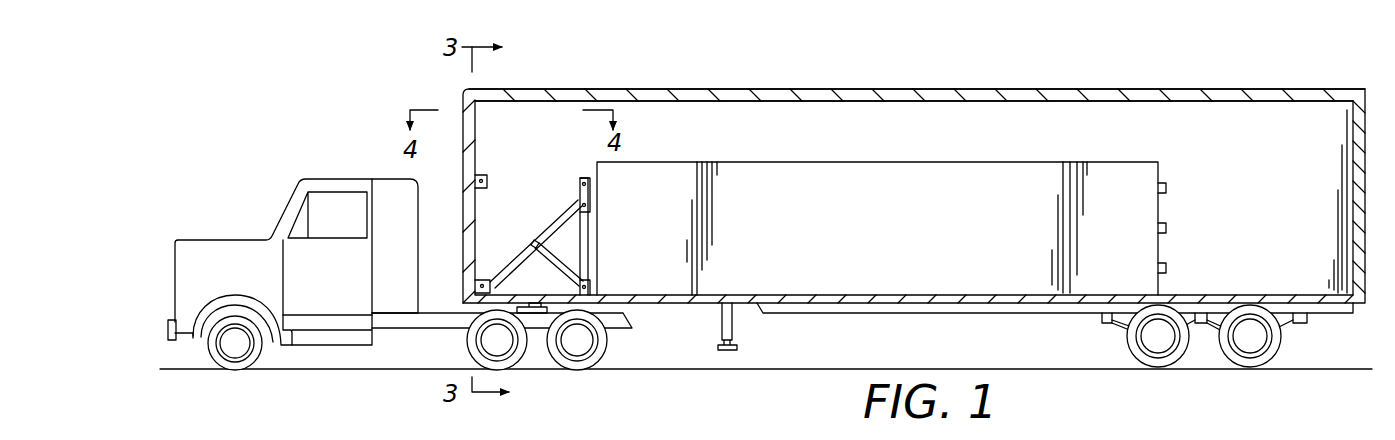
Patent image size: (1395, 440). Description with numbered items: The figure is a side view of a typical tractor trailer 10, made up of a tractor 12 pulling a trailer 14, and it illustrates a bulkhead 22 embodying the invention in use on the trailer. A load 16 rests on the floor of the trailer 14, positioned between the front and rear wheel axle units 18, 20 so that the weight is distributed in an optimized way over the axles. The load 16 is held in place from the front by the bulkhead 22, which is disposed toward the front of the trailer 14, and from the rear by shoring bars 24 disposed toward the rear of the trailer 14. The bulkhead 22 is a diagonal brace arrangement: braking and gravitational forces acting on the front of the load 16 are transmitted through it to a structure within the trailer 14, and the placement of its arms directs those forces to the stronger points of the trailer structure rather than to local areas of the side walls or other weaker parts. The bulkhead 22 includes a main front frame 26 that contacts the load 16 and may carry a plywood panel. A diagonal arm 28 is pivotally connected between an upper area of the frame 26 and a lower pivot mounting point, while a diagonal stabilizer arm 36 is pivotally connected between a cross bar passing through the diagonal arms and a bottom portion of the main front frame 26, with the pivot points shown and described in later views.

The tractor trailer 10 is at (604, 74).
The tractor 12 is at (313, 178).
The trailer 14 is at (790, 90).
The load 16 is at (972, 168).
The wheel axle unit 18 is at (603, 378).
The wheel axle unit 20 is at (1199, 374).
The bulkhead 22 is at (523, 178).
The shoring bars 24 is at (1166, 188).
The main front frame 26 is at (603, 249).
The diagonal arm 28 is at (518, 252).
The diagonal stabilizer arm 36 is at (557, 271).